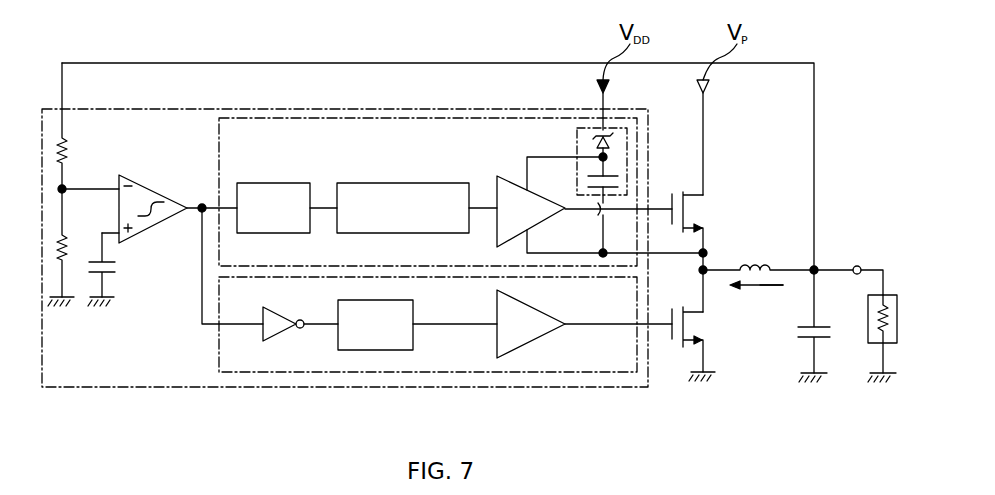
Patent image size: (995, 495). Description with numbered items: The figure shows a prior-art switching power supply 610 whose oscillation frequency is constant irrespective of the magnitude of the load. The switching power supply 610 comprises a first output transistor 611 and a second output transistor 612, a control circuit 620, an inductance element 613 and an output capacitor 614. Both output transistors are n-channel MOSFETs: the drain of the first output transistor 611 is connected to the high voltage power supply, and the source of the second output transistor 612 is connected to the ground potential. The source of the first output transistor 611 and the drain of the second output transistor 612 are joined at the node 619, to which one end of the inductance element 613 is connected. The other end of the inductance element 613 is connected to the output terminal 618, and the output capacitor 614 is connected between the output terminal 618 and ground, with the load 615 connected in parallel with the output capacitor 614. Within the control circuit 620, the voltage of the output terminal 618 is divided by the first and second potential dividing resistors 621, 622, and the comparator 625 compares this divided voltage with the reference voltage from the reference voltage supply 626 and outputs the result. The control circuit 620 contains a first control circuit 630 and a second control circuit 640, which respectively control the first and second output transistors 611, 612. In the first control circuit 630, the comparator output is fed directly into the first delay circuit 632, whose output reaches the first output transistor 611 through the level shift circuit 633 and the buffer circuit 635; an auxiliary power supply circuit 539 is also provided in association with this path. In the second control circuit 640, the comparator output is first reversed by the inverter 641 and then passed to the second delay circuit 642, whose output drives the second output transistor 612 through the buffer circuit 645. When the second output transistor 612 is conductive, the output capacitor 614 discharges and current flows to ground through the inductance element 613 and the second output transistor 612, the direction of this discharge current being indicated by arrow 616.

The switching power supply 610 is at (110, 45).
The control circuit 620 is at (412, 107).
The first potential dividing resistor 621 is at (72, 150).
The second potential dividing resistor 622 is at (74, 244).
The comparator 625 is at (146, 186).
The reference voltage supply 626 is at (84, 286).
The first control circuit 630 is at (212, 258).
The first delay circuit 632 is at (277, 183).
The level shift circuit 633 is at (401, 183).
The buffer circuit 635 is at (508, 176).
The auxiliary power supply circuit 539 is at (577, 115).
The second control circuit 640 is at (218, 363).
The inverter 641 is at (281, 332).
The second delay circuit 642 is at (413, 336).
The buffer circuit 645 is at (546, 336).
The first output transistor 611 is at (688, 203).
The second output transistor 612 is at (691, 324).
The inductance element 613 is at (758, 263).
The output capacitor 614 is at (801, 338).
The load 615 is at (868, 344).
The direction of the discharge current 616 is at (762, 285).
The output terminal 618 is at (857, 266).
The node 619 is at (706, 273).